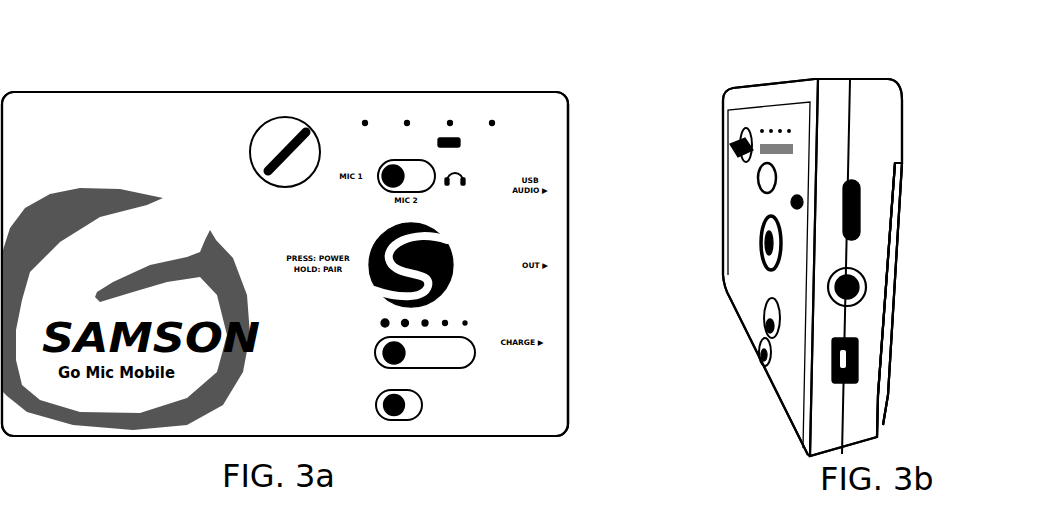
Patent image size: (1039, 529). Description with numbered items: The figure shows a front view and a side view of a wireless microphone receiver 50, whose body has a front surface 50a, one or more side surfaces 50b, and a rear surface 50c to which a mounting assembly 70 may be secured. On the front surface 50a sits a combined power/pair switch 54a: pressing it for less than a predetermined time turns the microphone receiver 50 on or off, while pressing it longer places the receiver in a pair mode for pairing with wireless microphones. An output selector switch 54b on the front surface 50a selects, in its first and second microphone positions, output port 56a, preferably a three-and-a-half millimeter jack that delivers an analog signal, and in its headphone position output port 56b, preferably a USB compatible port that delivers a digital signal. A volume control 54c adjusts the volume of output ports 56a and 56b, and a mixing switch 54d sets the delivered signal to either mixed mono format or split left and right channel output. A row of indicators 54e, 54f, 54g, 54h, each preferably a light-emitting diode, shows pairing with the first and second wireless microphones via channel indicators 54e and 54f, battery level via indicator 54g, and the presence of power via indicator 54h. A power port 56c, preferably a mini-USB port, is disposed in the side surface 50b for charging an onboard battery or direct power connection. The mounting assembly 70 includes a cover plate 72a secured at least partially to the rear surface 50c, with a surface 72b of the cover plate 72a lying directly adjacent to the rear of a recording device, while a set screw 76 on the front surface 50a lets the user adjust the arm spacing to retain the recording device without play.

In FIG. 3a, the microphone receiver 50 is at (276, 56).
In FIG. 3b, the microphone receiver 50 is at (740, 377).
In FIG. 3a, the front surface 50a is at (118, 162).
In FIG. 3b, the front surface 50a is at (746, 269).
In FIG. 3a, the side surface 50b is at (595, 91).
In FIG. 3b, the side surface 50b is at (858, 251).
In FIG. 3b, the rear surface 50c is at (940, 294).
In FIG. 3a, the power/pair switch 54a is at (512, 261).
In FIG. 3a, the output selector switch 54b is at (478, 167).
In FIG. 3a, the volume control 54c is at (480, 355).
In FIG. 3a, the mixing switch 54d is at (467, 405).
In FIG. 3a, the channel indicator 54e is at (365, 115).
In FIG. 3a, the channel indicator 54f is at (407, 115).
In FIG. 3a, the battery indicator 54g is at (450, 115).
In FIG. 3a, the power indicator 54h is at (492, 115).
In FIG. 3b, the output port 56a is at (916, 255).
In FIG. 3b, the output port 56b is at (923, 182).
In FIG. 3b, the power port 56c is at (917, 329).
In FIG. 3b, the mounting assembly 70 is at (923, 188).
In FIG. 3b, the cover plate 72a is at (942, 300).
In FIG. 3b, the surface of cover plate 72b is at (945, 294).
In FIG. 3a, the set screw 76 is at (246, 171).
In FIG. 3b, the set screw 76 is at (692, 159).